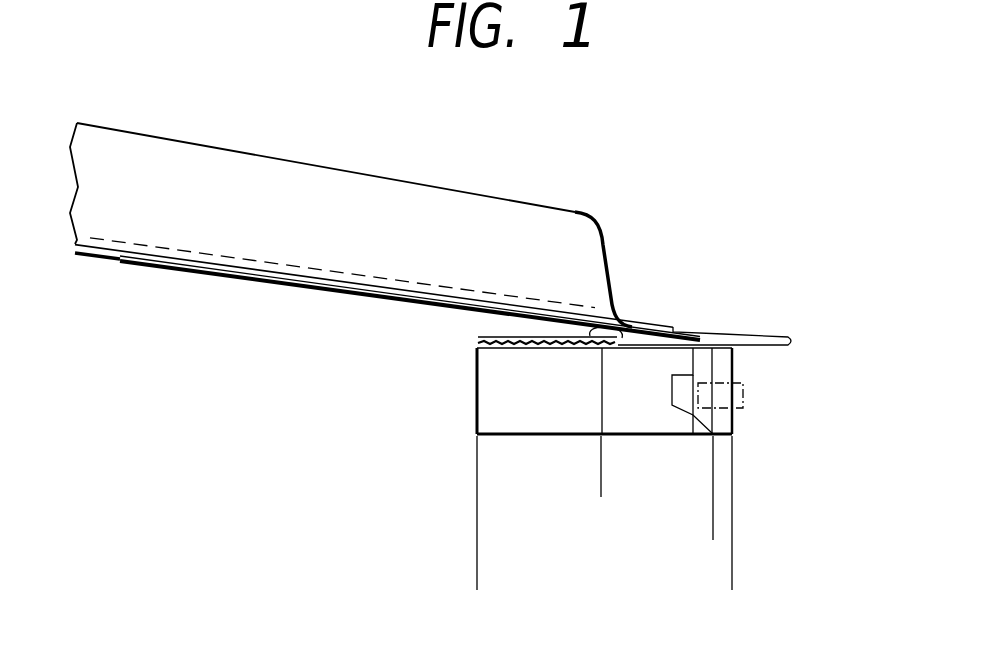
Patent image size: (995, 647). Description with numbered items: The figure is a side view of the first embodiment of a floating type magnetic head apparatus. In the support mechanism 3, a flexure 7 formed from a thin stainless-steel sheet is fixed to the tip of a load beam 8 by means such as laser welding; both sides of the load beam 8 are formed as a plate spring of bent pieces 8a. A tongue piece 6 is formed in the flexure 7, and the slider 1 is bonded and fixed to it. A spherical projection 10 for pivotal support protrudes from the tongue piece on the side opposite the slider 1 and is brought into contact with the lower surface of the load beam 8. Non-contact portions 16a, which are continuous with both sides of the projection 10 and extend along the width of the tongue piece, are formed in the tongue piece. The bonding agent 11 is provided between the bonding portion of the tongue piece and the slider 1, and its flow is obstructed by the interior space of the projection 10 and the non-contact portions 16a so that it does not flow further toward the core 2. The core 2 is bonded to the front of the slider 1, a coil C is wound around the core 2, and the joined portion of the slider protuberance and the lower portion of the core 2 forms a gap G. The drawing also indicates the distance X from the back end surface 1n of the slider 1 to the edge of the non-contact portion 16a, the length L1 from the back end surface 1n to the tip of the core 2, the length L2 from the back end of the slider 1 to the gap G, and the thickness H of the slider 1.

The slider 1 is at (528, 432).
The back end surface of the slider 1n is at (477, 405).
The core 2 is at (723, 425).
The support mechanism 3 is at (451, 180).
The tongue piece 6 is at (490, 335).
The flexure 7 is at (255, 286).
The load beam 8 is at (93, 255).
The bent pieces 8a is at (243, 177).
The spherical projection 10 is at (600, 327).
The bonding agent 11 is at (475, 348).
The non-contact portions 16a is at (615, 343).
The coil C is at (745, 405).
The gap G is at (707, 440).
The thickness of the slider H is at (500, 350).
The distance from the back end surface to the edge portion of the non-contact portio X is at (478, 487).
The length from the back end surface of the slider to the tip of the core L1 is at (731, 577).
The length from the back end of the slider to the gap L2 is at (478, 532).